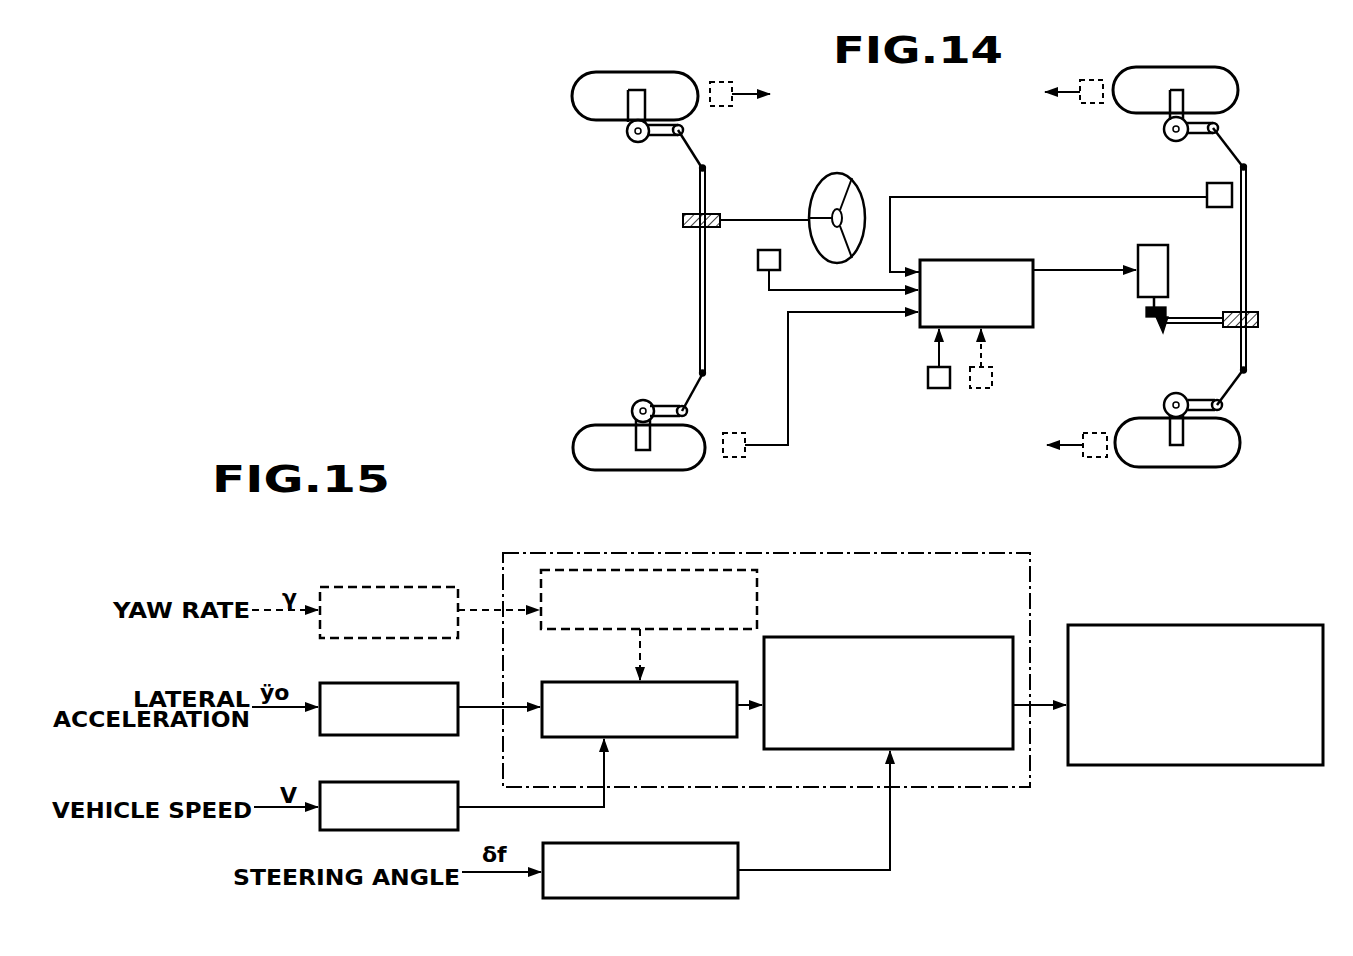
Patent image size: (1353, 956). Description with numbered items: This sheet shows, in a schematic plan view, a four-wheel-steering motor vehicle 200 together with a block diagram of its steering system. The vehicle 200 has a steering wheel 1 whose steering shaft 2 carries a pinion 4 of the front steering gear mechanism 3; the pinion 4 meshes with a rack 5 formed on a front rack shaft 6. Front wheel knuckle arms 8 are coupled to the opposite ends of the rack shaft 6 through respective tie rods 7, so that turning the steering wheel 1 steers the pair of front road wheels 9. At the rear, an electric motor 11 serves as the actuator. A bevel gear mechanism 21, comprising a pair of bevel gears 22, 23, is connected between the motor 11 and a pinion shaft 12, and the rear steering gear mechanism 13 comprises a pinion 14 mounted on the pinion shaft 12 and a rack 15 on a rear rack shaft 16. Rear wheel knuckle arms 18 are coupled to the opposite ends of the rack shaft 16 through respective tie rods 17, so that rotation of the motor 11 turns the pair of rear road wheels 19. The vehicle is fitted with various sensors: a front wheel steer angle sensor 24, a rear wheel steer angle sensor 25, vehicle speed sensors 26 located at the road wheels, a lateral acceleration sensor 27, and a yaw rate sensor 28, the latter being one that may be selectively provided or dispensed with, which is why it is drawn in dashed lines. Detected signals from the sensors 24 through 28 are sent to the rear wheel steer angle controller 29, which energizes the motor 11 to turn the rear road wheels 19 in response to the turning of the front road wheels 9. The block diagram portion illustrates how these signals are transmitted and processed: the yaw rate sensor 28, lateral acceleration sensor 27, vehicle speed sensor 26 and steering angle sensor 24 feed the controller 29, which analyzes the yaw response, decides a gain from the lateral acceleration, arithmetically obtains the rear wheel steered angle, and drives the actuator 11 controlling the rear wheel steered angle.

In FIG. 14, the steering wheel 1 is at (838, 174).
In FIG. 14, the steering shaft 2 is at (777, 218).
In FIG. 14, the front steering gear mechanism 3 is at (680, 221).
In FIG. 14, the pinion 4 is at (710, 214).
In FIG. 14, the rack 5 is at (690, 228).
In FIG. 14, the front rack shaft 6 is at (700, 310).
In FIG. 14, the tie rods 7 is at (705, 155).
In FIG. 14, the front wheel knuckle arms 8 is at (660, 138).
In FIG. 14, the front road wheels 9 is at (580, 78).
In FIG. 14, the electric motor 11 is at (1147, 245).
In FIG. 15, the electric motor 11 is at (1176, 625).
In FIG. 14, the pinion shaft 12 is at (1195, 317).
In FIG. 14, the rear steering gear mechanism 13 is at (1262, 318).
In FIG. 14, the pinion 14 is at (1250, 330).
In FIG. 14, the rack 15 is at (1250, 312).
In FIG. 14, the rear rack shaft 16 is at (1248, 226).
In FIG. 14, the tie rods 17 is at (1232, 148).
In FIG. 14, the rear wheel knuckle arms 18 is at (1198, 140).
In FIG. 14, the rear road wheels 19 is at (1232, 72).
In FIG. 14, the bevel gear mechanism 21 is at (1130, 334).
In FIG. 14, the bevel gear 22 is at (1145, 312).
In FIG. 14, the bevel gear 23 is at (1161, 333).
In FIG. 14, the front wheel steer angle sensor 24 is at (760, 272).
In FIG. 15, the front wheel steer angle sensor 24 is at (740, 886).
In FIG. 14, the rear wheel steer angle sensor 25 is at (1219, 208).
In FIG. 14, the vehicle speed sensors 26 is at (733, 84).
In FIG. 15, the vehicle speed sensors 26 is at (394, 830).
In FIG. 14, the lateral acceleration sensor 27 is at (935, 390).
In FIG. 15, the lateral acceleration sensor 27 is at (392, 683).
In FIG. 14, the yaw rate sensor 28 is at (983, 390).
In FIG. 15, the yaw rate sensor 28 is at (394, 587).
In FIG. 14, the rear wheel steer angle controller 29 is at (983, 260).
In FIG. 15, the rear wheel steer angle controller 29 is at (1032, 603).
In FIG. 14, the 4WS motor vehicle 200 is at (966, 165).